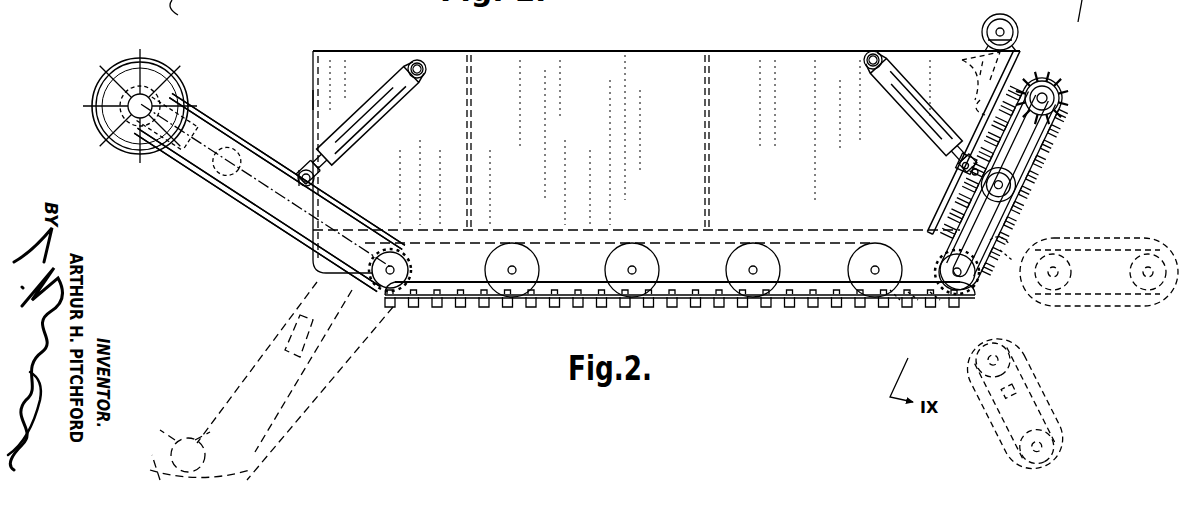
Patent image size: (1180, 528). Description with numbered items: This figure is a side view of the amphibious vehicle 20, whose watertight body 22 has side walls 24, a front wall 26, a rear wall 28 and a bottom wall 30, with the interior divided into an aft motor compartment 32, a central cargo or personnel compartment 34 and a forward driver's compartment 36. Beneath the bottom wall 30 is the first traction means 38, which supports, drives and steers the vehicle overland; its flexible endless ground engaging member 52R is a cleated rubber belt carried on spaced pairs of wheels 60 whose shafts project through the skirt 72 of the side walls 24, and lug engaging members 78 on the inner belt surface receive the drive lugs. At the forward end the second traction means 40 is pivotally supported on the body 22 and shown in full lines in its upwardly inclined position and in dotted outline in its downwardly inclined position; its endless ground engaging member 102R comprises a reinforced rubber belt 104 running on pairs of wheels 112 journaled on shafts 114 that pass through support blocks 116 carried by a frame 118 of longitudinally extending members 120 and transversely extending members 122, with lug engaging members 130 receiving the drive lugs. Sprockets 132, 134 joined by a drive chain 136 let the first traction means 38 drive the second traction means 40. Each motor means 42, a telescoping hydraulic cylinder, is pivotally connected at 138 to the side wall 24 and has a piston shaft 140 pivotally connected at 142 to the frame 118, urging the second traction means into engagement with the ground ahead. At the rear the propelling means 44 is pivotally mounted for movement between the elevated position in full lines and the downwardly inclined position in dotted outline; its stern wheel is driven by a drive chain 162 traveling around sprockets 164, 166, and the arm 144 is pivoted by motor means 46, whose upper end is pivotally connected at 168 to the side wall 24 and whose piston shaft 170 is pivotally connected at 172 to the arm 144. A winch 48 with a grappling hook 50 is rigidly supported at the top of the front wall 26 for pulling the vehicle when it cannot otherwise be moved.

The amphibious vehicle 20 is at (305, 50).
The body 22 is at (617, 62).
The side walls 24 is at (607, 127).
The front wall 26 is at (1017, 58).
The rear wall 28 is at (313, 100).
The bottom wall 30 is at (615, 228).
The aft motor compartment 32 is at (377, 50).
The central cargo or personnel compartment 34 is at (535, 50).
The forward driver's compartment 36 is at (810, 52).
The first traction means 38 is at (548, 315).
The second traction means 40 is at (1092, 92).
The motor means 42 is at (915, 125).
The propelling means 44 is at (105, 50).
The motor means 46 is at (382, 121).
The winch 48 is at (1012, 14).
The grappling hook 50 is at (962, 60).
The flexible endless ground engaging member 52R is at (778, 313).
The wheels 60 is at (415, 276).
The skirt or extension 72 is at (690, 292).
The lug engaging members 78 is at (480, 308).
The flexible endless ground engaging member 102R is at (1064, 184).
The reinforced rubber belt 104 is at (1062, 82).
The wheels 112 is at (1050, 103).
The axles or shafts 114 is at (1067, 125).
The support blocks 116 is at (1062, 162).
The frame 118 is at (962, 206).
The longitudinally extending members 120 is at (953, 212).
The transversely extending members 122 is at (992, 114).
The lug engaging members 130 is at (1018, 249).
The sprocket 132 is at (893, 300).
The sprocket 134 is at (935, 300).
The drive chain 136 is at (913, 300).
The pivotal connection 138 is at (868, 68).
The piston shaft 140 is at (168, 58).
The pivotal connection 142 is at (955, 182).
The arm 144 is at (175, 33).
The drive chain 162 is at (232, 124).
The sprocket 164 is at (152, 163).
The sprocket 166 is at (313, 272).
The pivotal connection 168 is at (421, 77).
The piston shaft 170 is at (332, 172).
The pivotal connection 172 is at (315, 180).